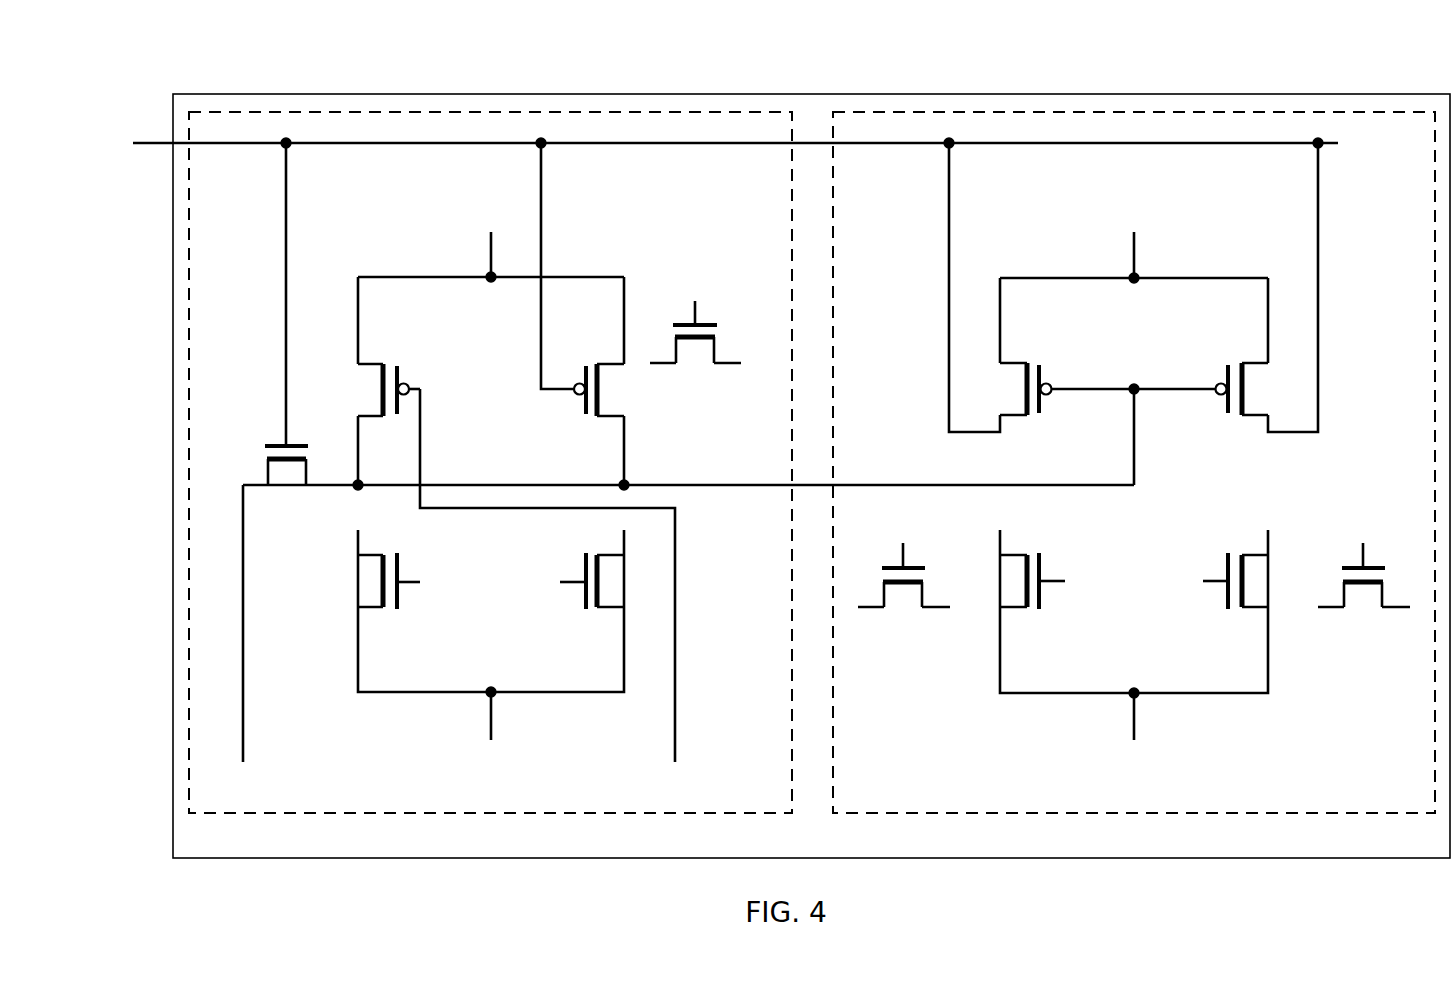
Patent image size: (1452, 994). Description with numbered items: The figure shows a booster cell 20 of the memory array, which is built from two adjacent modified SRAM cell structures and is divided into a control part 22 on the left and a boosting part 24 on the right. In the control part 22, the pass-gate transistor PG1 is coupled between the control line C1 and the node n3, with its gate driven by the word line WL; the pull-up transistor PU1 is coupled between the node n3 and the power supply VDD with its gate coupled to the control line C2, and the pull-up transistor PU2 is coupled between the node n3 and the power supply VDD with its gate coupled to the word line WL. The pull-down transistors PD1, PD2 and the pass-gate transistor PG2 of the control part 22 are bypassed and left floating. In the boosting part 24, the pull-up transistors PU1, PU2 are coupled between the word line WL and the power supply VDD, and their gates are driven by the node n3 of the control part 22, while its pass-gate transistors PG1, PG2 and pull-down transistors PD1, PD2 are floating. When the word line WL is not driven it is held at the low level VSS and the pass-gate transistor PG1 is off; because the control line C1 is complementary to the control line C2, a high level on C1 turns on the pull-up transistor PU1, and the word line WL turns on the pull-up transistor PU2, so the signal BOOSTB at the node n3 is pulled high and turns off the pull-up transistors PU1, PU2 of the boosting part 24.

The booster cell 20 is at (1285, 858).
The control part 22 is at (190, 83).
The boosting part 24 is at (1435, 83).
The pull-up transistor PU1 is at (405, 373).
The pull-up transistor PU2 is at (578, 407).
The pull-down transistor PD1 is at (405, 597).
The pull-down transistor PD2 is at (580, 598).
The pass-gate transistor PG1 is at (286, 470).
The pass-gate transistor PG2 is at (695, 345).
The word line WL is at (711, 142).
The power supply VDD is at (812, 239).
The low voltage level VSS is at (813, 734).
The node n3 is at (319, 497).
The signal BOOSTB is at (746, 470).
The control line C1 is at (242, 640).
The control line C2 is at (557, 592).